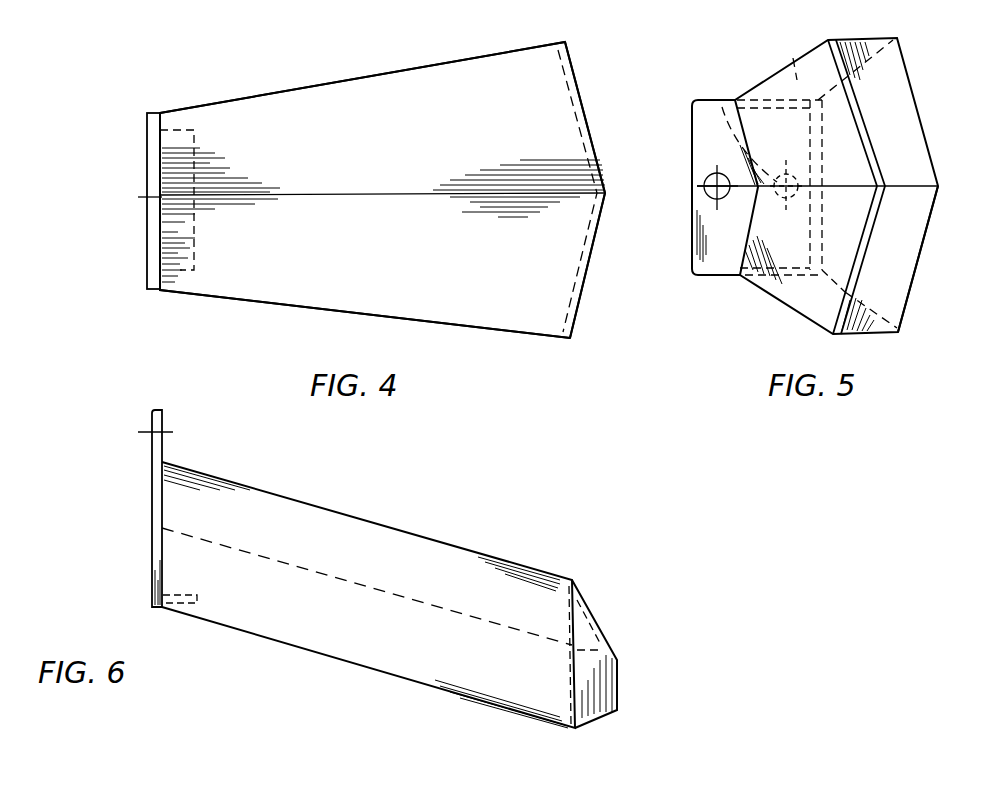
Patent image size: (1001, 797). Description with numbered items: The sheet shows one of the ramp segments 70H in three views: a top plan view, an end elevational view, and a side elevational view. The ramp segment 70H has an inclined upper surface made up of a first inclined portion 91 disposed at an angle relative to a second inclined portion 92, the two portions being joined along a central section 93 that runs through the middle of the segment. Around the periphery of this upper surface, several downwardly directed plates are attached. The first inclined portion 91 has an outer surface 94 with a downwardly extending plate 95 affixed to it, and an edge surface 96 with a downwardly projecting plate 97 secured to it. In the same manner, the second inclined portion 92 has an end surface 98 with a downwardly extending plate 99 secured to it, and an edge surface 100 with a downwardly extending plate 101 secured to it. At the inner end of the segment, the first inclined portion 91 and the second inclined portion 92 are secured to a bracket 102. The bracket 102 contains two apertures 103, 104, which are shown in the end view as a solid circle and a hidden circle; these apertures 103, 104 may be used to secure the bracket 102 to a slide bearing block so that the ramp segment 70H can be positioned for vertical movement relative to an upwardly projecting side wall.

In FIG. 4, the edge surface 100 is at (238, 97).
In FIG. 4, the second inclined portion 92 is at (378, 88).
In FIG. 4, the central section 93 is at (308, 193).
In FIG. 4, the end surface 98 is at (585, 92).
In FIG. 4, the outer surface 94 is at (585, 290).
In FIG. 4, the first inclined portion 91 is at (506, 296).
In FIG. 4, the edge surface 96 is at (307, 302).
In FIG. 4, the ramp segment 70H is at (233, 257).
In FIG. 5, the ramp segment 70H is at (791, 196).
In FIG. 4, the bracket 102 is at (148, 235).
In FIG. 5, the bracket 102 is at (718, 263).
In FIG. 6, the bracket 102 is at (163, 418).
In FIG. 5, the downwardly extending plate 101 is at (793, 58).
In FIG. 5, the aperture 104 is at (722, 107).
In FIG. 5, the aperture 103 is at (693, 224).
In FIG. 5, the downwardly extending plate 99 is at (898, 110).
In FIG. 5, the downwardly extending plate 95 is at (907, 243).
In FIG. 6, the downwardly extending plate 95 is at (588, 643).
In FIG. 6, the downwardly projecting plate 97 is at (450, 562).